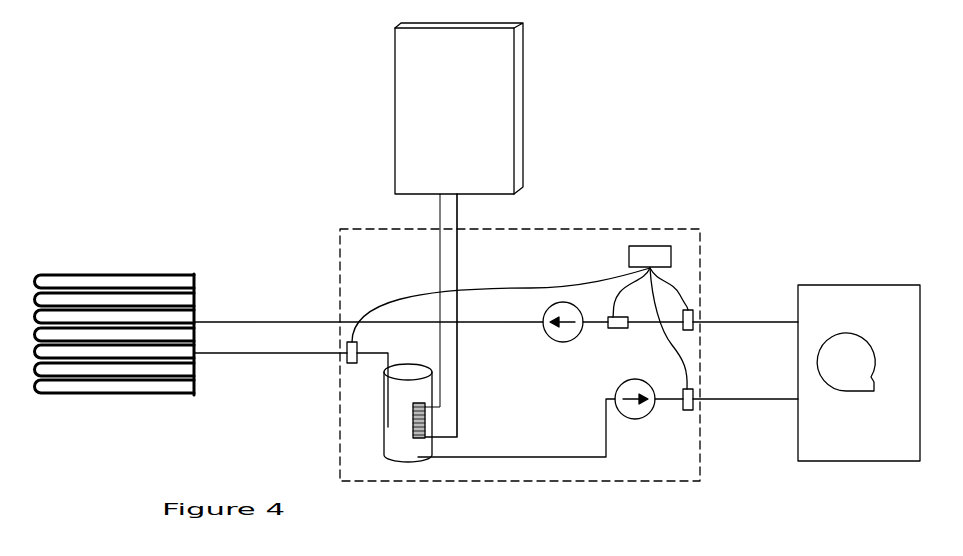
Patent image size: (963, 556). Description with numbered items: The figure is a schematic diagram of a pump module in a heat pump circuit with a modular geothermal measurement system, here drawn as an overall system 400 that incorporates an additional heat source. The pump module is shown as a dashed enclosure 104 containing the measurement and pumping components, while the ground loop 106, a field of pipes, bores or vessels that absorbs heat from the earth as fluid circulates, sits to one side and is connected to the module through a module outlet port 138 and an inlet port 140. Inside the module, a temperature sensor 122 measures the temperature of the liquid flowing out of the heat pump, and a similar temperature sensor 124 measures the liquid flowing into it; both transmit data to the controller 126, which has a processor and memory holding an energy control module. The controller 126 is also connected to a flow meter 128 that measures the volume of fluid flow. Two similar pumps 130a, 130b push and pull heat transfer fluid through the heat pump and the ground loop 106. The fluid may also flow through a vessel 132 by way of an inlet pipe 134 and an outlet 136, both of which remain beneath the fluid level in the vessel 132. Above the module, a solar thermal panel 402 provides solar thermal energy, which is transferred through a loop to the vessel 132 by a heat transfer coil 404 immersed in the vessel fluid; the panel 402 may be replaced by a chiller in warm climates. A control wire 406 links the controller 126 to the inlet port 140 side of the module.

The thermal regulation system 400 is at (238, 201).
The solar thermal panel 402 is at (518, 107).
The heat transfer coil 404 is at (425, 437).
The control wire 406 is at (359, 352).
The control unit enclosure 104 is at (702, 268).
The ground loop 106 is at (80, 273).
The temperature sensor 122 is at (695, 313).
The temperature sensor 124 is at (696, 406).
The controller 126 is at (668, 245).
The flow meter 128 is at (612, 317).
The pump 130a is at (620, 385).
The pump 130b is at (554, 302).
The vessel 132 is at (383, 446).
The inlet pipe 134 is at (386, 412).
The outlet 136 is at (608, 433).
The module outlet port 138 is at (338, 318).
The inlet port 140 is at (344, 355).